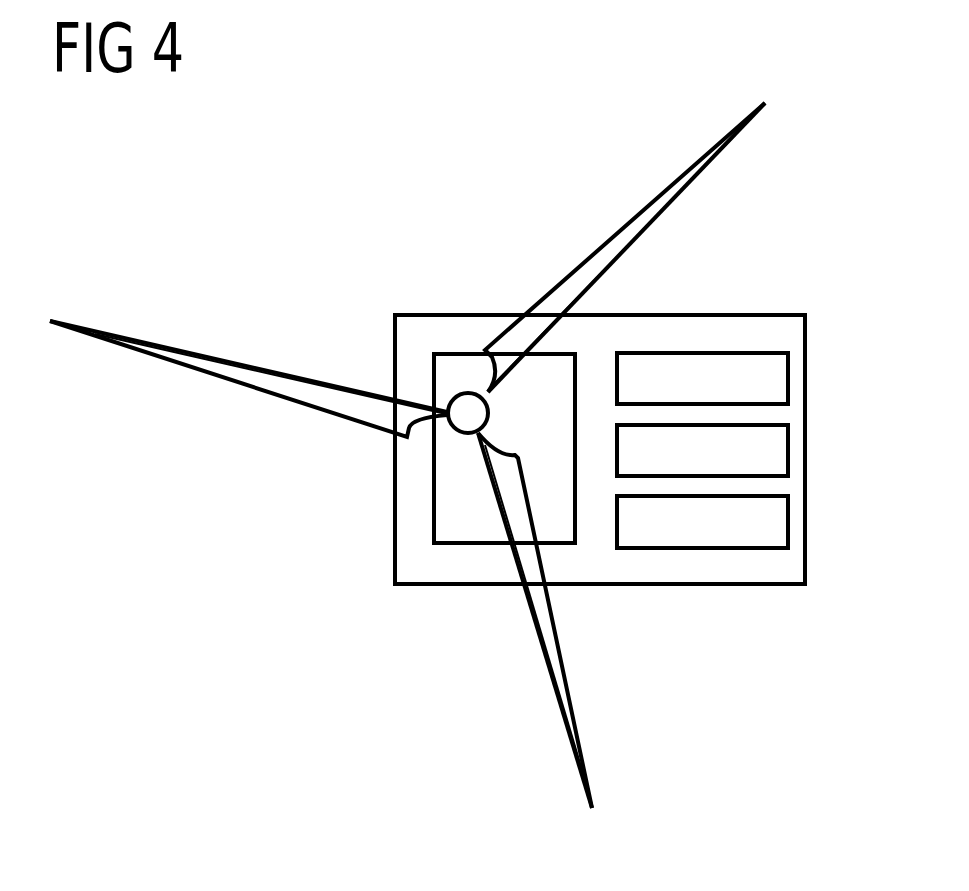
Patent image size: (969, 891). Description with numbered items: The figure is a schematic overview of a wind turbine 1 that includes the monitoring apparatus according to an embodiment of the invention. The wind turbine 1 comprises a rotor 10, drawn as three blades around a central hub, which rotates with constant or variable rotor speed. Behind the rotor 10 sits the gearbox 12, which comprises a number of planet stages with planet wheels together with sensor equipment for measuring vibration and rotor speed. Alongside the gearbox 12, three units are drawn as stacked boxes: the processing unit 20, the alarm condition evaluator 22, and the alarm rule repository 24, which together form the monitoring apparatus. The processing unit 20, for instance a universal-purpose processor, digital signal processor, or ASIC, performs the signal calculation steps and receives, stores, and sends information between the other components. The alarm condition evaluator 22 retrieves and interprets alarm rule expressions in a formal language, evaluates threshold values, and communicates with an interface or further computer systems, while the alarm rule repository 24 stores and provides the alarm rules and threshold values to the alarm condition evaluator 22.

The wind turbine 1 is at (357, 240).
The rotor 10 is at (277, 386).
The gearbox 12 is at (458, 353).
The processing unit 20 is at (788, 378).
The alarm condition evaluator 22 is at (788, 450).
The alarm rule repository 24 is at (788, 521).